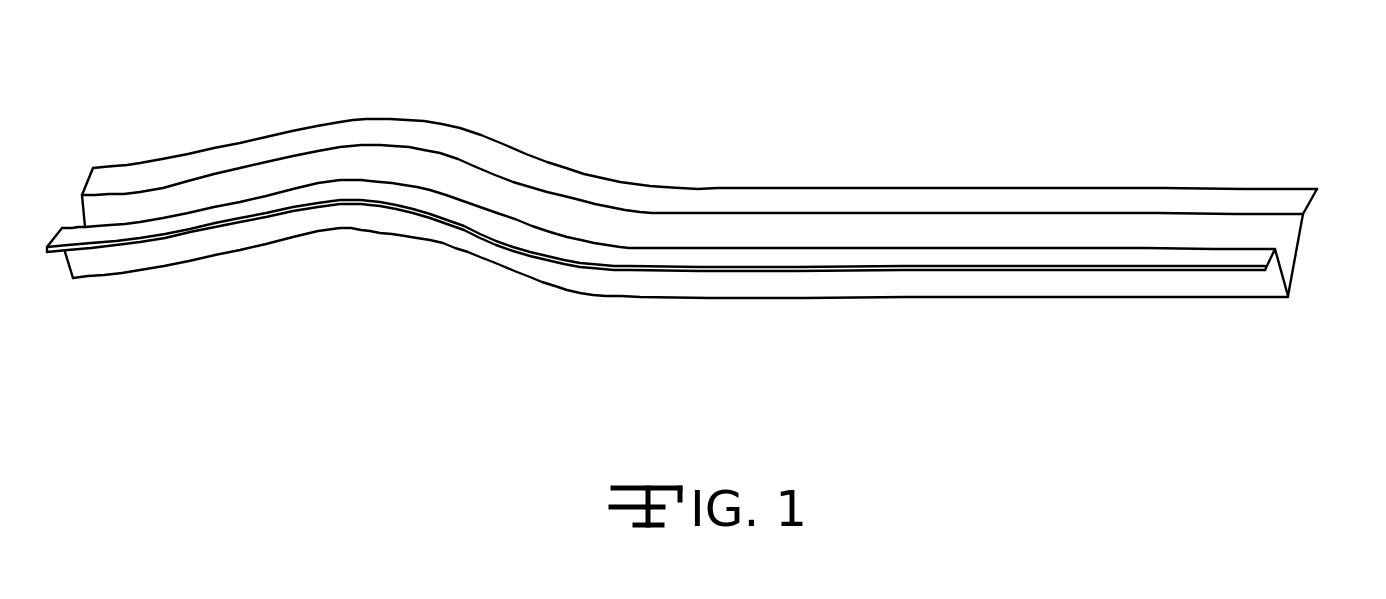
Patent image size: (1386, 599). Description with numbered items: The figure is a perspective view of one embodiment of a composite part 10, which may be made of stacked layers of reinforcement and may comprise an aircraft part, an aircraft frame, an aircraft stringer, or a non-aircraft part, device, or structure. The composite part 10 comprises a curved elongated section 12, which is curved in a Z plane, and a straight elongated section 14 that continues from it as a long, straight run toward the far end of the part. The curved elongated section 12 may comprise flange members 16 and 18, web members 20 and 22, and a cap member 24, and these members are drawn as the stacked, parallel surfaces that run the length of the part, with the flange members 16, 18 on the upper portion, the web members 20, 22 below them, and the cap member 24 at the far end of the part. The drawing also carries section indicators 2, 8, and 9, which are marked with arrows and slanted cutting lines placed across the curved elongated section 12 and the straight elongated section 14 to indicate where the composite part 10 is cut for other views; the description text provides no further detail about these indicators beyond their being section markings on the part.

The section line 2- 2 is at (377, 108).
The section line 8- 8 is at (968, 180).
The section line 9- 9 is at (447, 88).
The composite part 10 is at (709, 220).
The curved elongated section 12 is at (699, 122).
The straight elongated section 14 is at (717, 280).
The flange member 16 is at (702, 304).
The flange member 18 is at (1160, 197).
The web member 20 is at (1218, 287).
The web member 22 is at (1288, 243).
The cap member 24 is at (1288, 296).